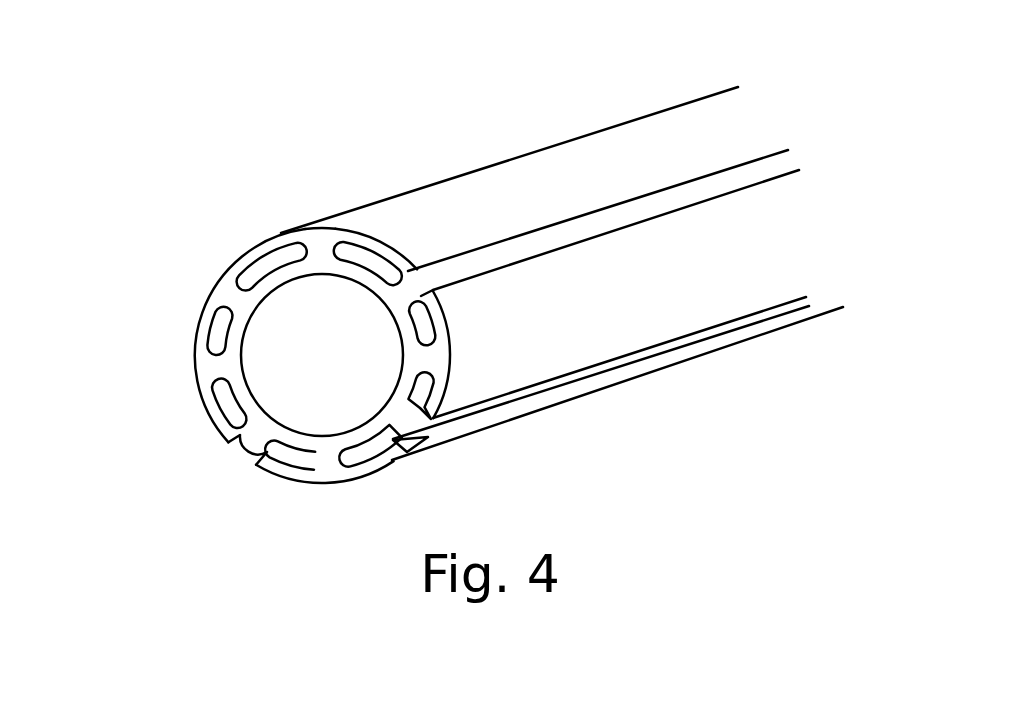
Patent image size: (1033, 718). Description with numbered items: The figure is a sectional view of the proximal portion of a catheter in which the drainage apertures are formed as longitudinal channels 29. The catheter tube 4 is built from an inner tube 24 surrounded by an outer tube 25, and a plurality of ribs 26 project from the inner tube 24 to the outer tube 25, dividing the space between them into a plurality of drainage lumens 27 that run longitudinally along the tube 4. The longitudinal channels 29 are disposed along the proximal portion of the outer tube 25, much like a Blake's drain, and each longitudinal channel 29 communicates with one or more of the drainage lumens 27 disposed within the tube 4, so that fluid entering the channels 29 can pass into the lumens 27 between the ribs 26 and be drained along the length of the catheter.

The tube 4 is at (598, 140).
The inner tube 24 is at (377, 288).
The outer tube 25 is at (204, 318).
The connecting web 26 is at (318, 240).
The drainage lumens 27 is at (265, 258).
The longitudinal channels 29 is at (561, 238).